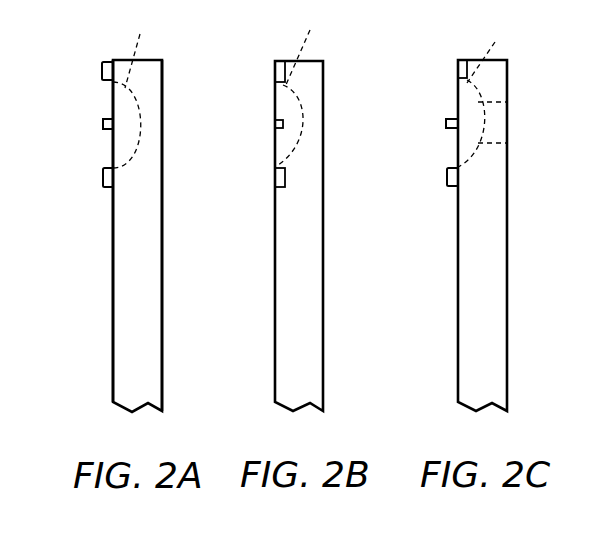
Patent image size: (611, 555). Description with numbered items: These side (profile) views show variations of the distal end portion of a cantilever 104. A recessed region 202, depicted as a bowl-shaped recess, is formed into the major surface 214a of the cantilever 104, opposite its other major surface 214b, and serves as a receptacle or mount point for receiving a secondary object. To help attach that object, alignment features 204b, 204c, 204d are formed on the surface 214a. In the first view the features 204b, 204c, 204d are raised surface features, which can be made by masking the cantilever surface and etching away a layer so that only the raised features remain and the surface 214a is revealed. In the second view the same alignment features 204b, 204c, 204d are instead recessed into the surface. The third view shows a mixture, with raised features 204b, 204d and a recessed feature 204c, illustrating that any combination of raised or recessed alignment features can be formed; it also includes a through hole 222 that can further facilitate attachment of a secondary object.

In FIG. 2A, the cantilever 104 is at (163, 360).
In FIG. 2B, the cantilever 104 is at (324, 325).
In FIG. 2C, the cantilever 104 is at (508, 335).
In FIG. 2A, the recessed region 202 is at (140, 38).
In FIG. 2B, the recessed region 202 is at (310, 33).
In FIG. 2C, the recessed region 202 is at (495, 45).
In FIG. 2A, the alignment feature 204b is at (103, 183).
In FIG. 2B, the alignment feature 204b is at (275, 177).
In FIG. 2C, the alignment feature 204b is at (447, 178).
In FIG. 2A, the alignment feature 204c is at (102, 63).
In FIG. 2B, the alignment feature 204c is at (273, 71).
In FIG. 2C, the alignment feature 204c is at (457, 69).
In FIG. 2A, the alignment feature 204d is at (103, 126).
In FIG. 2B, the alignment feature 204d is at (280, 124).
In FIG. 2C, the alignment feature 204d is at (446, 125).
In FIG. 2A, the major surface 214a is at (112, 277).
In FIG. 2A, the major surface 214b is at (163, 283).
In FIG. 2C, the through hole 222 is at (507, 117).